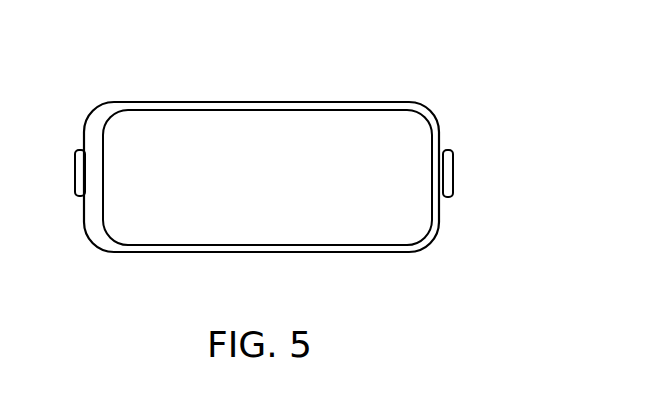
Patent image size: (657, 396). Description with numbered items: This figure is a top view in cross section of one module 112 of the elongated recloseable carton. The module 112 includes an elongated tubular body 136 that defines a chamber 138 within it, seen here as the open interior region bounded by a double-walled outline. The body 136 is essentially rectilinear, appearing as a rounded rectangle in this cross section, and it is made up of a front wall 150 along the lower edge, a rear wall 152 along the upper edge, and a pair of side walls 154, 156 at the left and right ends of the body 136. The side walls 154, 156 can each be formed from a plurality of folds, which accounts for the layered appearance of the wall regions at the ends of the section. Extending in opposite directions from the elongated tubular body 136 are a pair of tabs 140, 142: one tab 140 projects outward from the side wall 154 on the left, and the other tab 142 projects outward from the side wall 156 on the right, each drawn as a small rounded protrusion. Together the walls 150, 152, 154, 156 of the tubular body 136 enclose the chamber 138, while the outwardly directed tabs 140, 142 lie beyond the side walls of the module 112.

The module 112 is at (277, 169).
The elongated tubular body 136 is at (438, 130).
The chamber 138 is at (217, 125).
The tab 140 is at (78, 164).
The tab 142 is at (448, 173).
The front wall 150 is at (308, 247).
The rear wall 152 is at (393, 103).
The side wall 154 is at (98, 220).
The side wall 156 is at (437, 222).